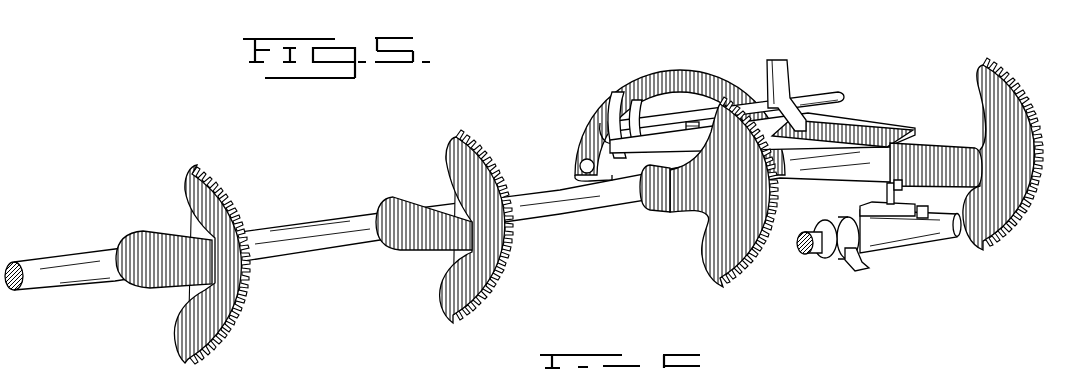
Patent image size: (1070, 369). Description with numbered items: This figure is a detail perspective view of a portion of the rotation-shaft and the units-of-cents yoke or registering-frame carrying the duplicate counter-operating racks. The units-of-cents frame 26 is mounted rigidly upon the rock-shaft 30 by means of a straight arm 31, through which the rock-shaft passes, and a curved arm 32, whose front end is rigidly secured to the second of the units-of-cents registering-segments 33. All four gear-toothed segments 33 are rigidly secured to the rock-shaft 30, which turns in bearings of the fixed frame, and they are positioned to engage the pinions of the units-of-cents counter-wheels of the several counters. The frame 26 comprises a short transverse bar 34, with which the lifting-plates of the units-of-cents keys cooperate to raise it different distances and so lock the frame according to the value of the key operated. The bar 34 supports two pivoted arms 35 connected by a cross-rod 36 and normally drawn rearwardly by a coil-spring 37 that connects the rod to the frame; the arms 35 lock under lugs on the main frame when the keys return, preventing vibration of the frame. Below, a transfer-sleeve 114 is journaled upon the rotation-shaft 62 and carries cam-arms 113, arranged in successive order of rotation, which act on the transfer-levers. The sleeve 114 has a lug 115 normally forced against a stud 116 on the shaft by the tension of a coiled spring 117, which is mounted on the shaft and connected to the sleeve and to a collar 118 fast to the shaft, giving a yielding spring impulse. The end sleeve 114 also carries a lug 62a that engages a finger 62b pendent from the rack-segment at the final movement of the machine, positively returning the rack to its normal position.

The units-of-cents frame 26 is at (600, 150).
The rock-shaft 30 is at (642, 206).
The straight arm 31 is at (864, 124).
The curved arm 32 is at (652, 76).
The units-of-cents registering-segments 33 is at (252, 268).
The transverse bar 34 is at (664, 126).
The pivoted arms 35 is at (790, 86).
The cross-rod 36 is at (834, 99).
The coil-spring 37 is at (718, 140).
The rotation-shaft 62 is at (872, 208).
The lug 62a is at (879, 190).
The finger 62b is at (908, 186).
The cam-arms 113 is at (858, 258).
The transfer-sleeve 114 is at (893, 264).
The lug 115 is at (923, 219).
The stud 116 is at (925, 214).
The coiled spring 117 is at (843, 256).
The collar 118 is at (822, 254).